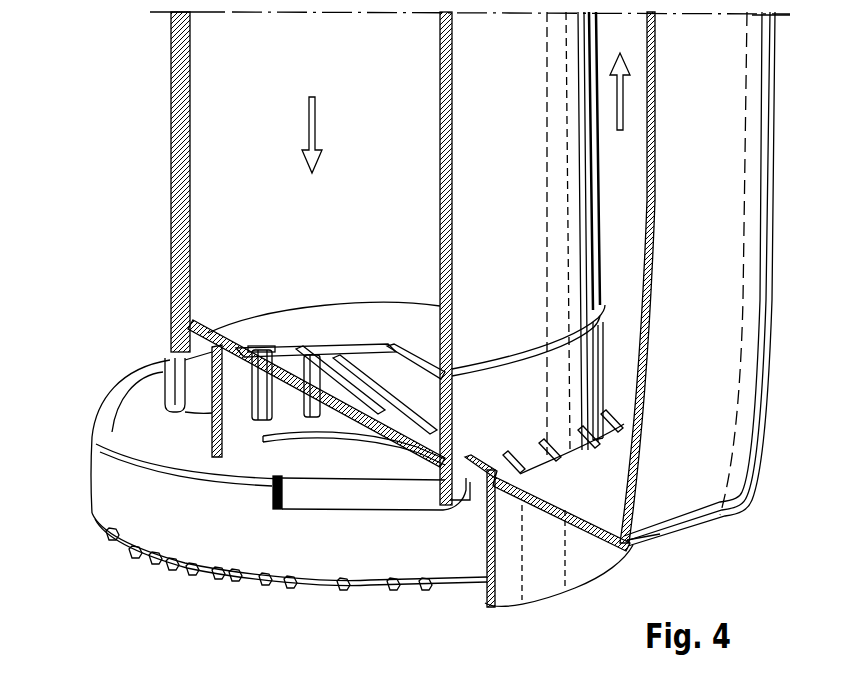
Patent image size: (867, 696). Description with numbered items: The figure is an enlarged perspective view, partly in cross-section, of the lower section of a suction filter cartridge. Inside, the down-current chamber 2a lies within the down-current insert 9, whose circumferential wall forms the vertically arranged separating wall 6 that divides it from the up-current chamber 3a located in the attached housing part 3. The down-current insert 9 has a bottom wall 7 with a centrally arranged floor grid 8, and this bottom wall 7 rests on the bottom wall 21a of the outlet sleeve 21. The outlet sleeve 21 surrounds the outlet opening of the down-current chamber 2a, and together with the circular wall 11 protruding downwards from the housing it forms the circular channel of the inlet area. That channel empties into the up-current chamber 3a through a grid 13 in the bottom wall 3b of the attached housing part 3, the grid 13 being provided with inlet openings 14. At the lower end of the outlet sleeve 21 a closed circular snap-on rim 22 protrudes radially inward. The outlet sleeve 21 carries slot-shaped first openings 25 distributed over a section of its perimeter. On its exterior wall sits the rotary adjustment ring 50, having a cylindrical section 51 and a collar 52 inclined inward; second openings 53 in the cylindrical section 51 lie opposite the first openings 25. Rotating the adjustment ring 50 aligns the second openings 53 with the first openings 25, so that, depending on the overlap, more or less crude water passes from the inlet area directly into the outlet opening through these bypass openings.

The down-current insert 9 is at (203, 192).
The separating wall 6 is at (440, 196).
The down-current chamber 2a is at (338, 59).
The up-current chamber 3a is at (637, 213).
The attached housing part 3 is at (742, 398).
The bottom wall 3b is at (540, 507).
The bottom wall 7 is at (225, 330).
The floor grid 8 is at (328, 378).
The circular wall 11 is at (576, 577).
The grid 13 is at (478, 460).
The inlet openings 14 is at (513, 447).
The outlet sleeve 21 is at (118, 410).
The bottom wall 21a is at (192, 340).
The snap-on rim 22 is at (350, 440).
The first openings 25 is at (305, 352).
The adjustment ring 50 is at (176, 533).
The cylindrical section 51 is at (248, 547).
The collar 52 is at (269, 583).
The second openings 53 is at (168, 376).